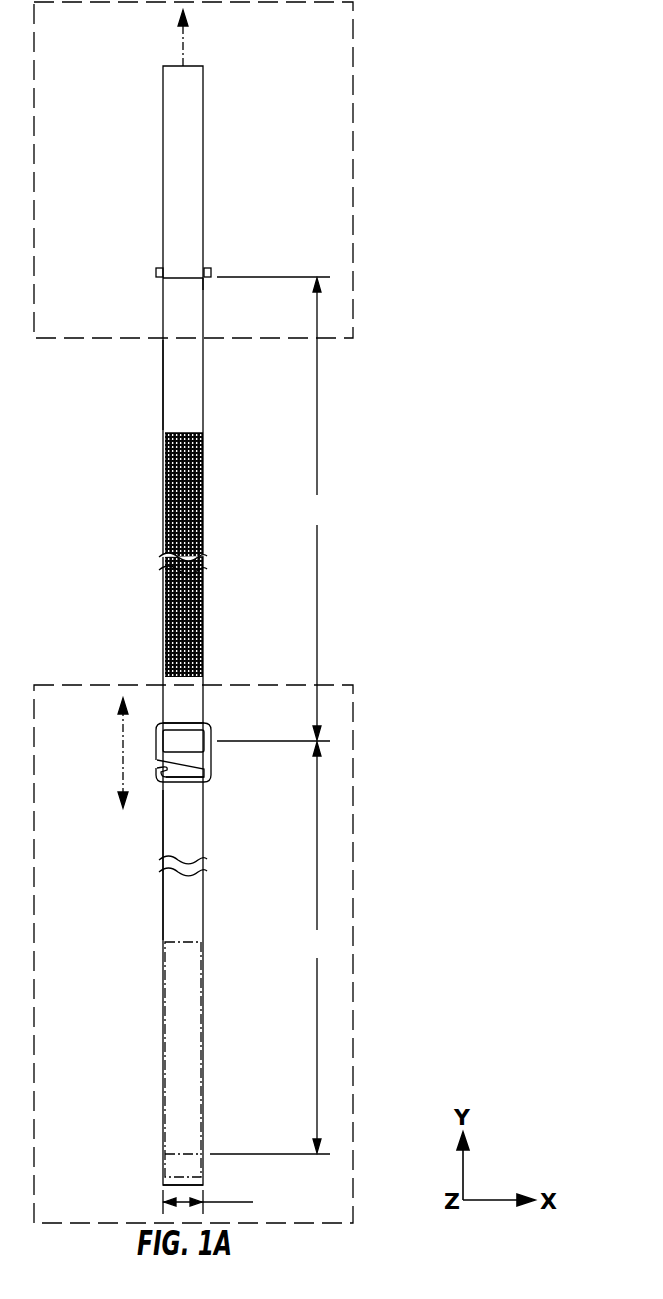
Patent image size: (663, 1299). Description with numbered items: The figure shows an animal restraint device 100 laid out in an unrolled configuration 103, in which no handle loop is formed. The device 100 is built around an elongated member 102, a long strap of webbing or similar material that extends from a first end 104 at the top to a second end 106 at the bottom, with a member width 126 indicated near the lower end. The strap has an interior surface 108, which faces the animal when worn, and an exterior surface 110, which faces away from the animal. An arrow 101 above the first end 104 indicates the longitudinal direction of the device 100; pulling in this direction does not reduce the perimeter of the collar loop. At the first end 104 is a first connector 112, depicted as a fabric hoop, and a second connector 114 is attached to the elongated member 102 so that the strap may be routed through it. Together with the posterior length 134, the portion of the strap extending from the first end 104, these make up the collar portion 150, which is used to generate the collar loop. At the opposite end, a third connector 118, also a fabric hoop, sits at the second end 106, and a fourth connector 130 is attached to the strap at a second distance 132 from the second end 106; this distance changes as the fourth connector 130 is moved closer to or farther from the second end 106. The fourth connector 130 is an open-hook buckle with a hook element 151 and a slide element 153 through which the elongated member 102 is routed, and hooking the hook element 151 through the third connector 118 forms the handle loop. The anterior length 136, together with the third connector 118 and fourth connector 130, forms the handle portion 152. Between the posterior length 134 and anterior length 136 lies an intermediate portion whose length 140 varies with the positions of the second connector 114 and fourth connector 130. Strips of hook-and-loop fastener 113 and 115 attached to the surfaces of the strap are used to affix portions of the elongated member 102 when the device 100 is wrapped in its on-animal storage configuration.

The animal restraint device 100 is at (413, 62).
The arrow indicating longitudinal direction 101 is at (183, 52).
The elongated member 102 is at (170, 405).
The unrolled configuration 103 is at (398, 467).
The first end 104 is at (172, 273).
The second end 106 is at (170, 1188).
The interior surface 108 is at (150, 603).
The exterior surface 110 is at (197, 390).
The first connector 112 is at (194, 278).
The strip of hook-and-loop fastener 113 is at (170, 500).
The second connector 114 is at (211, 272).
The strip of hook-and-loop fastener 115 is at (203, 1017).
The third connector 118 is at (200, 1164).
The member width 126 is at (224, 1203).
The fourth connector 130 is at (211, 757).
The second distance 132 is at (271, 947).
The posterior length 134 is at (170, 213).
The anterior length 136 is at (170, 828).
The length of intermediate length 140 is at (274, 508).
The collar portion 150 is at (345, 42).
The hook element 151 is at (193, 779).
The handle portion 152 is at (345, 1216).
The slide element 153 is at (211, 728).